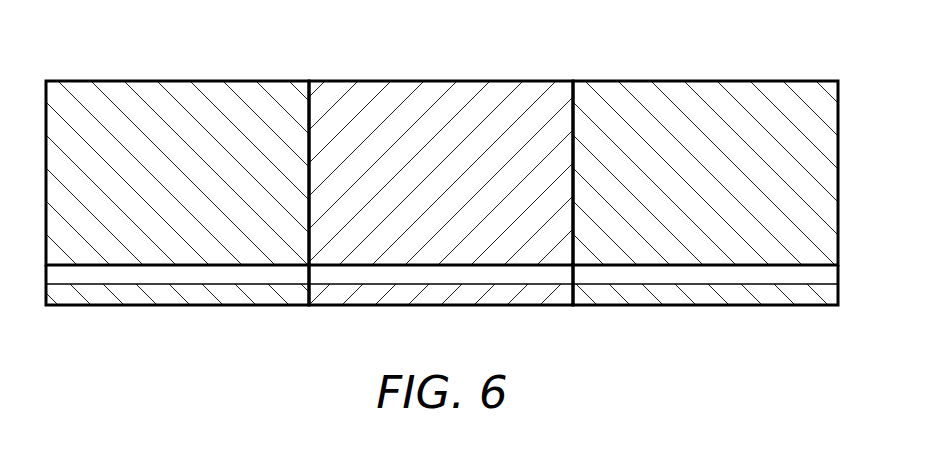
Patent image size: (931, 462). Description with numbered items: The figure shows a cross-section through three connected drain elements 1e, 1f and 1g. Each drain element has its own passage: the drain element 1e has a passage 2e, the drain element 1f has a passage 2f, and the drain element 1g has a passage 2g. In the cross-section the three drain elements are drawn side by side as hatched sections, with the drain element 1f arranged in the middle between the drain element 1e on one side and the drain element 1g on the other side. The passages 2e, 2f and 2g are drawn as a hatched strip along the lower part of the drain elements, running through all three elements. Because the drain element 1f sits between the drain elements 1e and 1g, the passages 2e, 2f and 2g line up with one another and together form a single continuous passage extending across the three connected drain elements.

The drain element 1e is at (178, 88).
The drain element 1f is at (442, 88).
The drain element 1g is at (704, 88).
The passage 2e is at (175, 275).
The passage 2f is at (440, 275).
The passage 2g is at (703, 275).